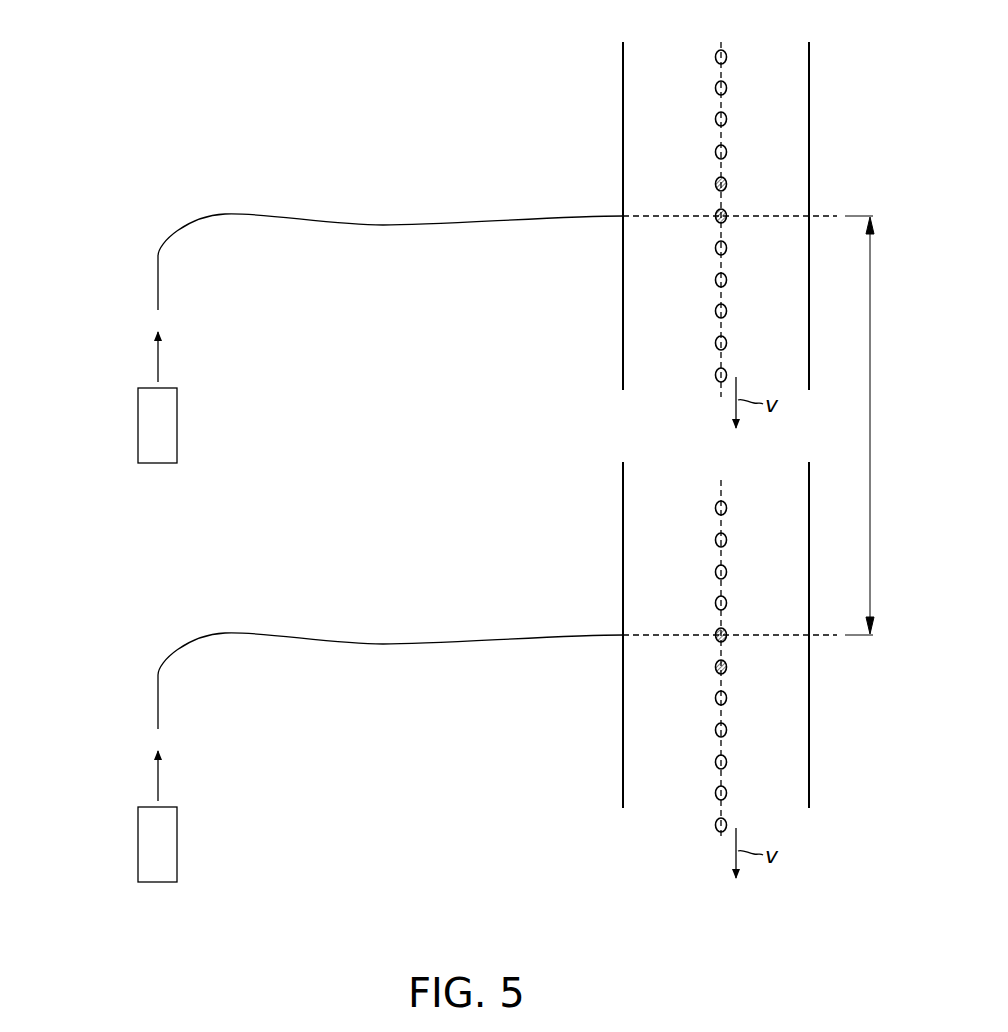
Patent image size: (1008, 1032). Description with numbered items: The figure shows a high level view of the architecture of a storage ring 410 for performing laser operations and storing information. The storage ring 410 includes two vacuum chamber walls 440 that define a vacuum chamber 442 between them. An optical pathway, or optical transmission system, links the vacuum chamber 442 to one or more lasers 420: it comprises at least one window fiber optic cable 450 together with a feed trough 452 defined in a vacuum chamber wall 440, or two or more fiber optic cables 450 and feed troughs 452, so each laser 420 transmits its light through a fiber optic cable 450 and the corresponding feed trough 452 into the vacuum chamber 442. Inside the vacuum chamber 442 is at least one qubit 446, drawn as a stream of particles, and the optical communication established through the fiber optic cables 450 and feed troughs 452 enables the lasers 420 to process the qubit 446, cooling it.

The storage ring 410 is at (768, 71).
The laser 420 is at (138, 425).
The vacuum chamber wall 440 is at (625, 822).
The vacuum chamber 442 is at (675, 71).
The qubit 446 is at (672, 111).
The fiber optic cable 450 is at (375, 225).
The feed trough 452 is at (620, 218).